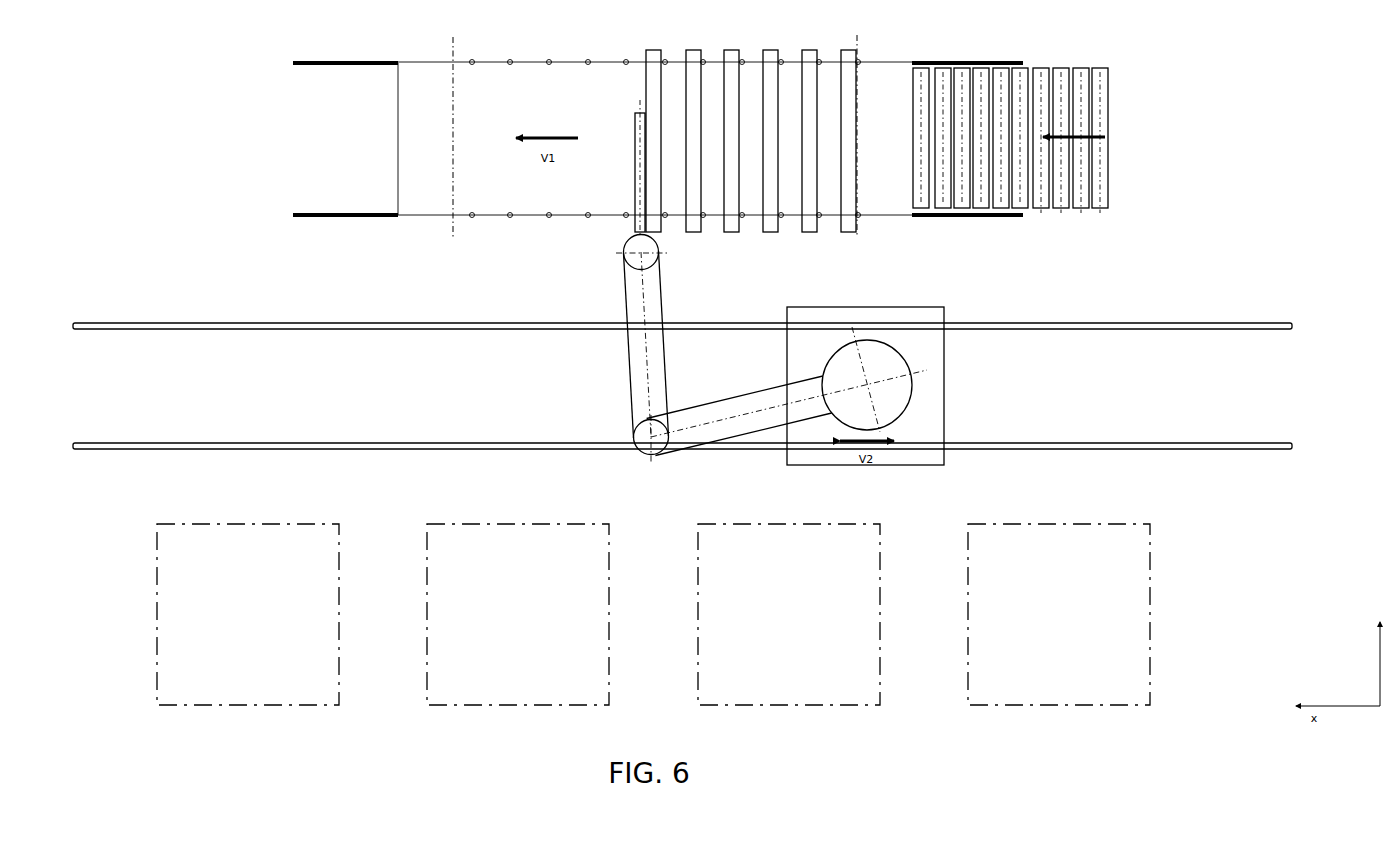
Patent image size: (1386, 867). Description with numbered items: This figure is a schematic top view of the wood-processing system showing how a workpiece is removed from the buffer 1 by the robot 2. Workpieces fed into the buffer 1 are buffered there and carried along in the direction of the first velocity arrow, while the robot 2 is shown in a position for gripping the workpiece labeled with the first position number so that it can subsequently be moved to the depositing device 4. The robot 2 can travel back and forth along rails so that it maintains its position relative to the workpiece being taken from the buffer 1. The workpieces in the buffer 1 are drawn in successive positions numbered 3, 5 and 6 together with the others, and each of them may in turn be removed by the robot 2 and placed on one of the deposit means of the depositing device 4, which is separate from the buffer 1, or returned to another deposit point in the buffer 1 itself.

The buffer 1 is at (653, 141).
The robot 2 is at (693, 141).
The plate position 3 is at (731, 141).
The depositing device 4 is at (770, 141).
The plate position 5 is at (809, 141).
The plate position 6 is at (848, 141).